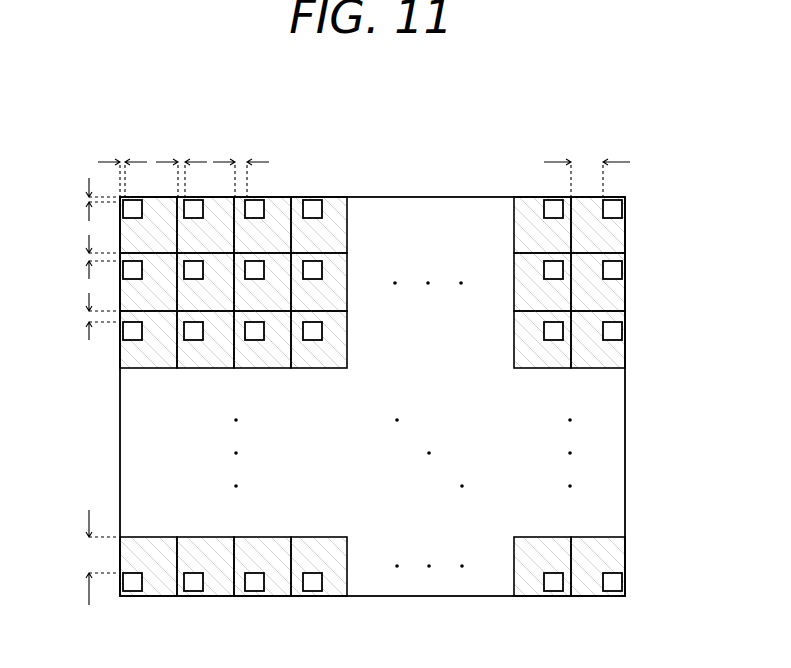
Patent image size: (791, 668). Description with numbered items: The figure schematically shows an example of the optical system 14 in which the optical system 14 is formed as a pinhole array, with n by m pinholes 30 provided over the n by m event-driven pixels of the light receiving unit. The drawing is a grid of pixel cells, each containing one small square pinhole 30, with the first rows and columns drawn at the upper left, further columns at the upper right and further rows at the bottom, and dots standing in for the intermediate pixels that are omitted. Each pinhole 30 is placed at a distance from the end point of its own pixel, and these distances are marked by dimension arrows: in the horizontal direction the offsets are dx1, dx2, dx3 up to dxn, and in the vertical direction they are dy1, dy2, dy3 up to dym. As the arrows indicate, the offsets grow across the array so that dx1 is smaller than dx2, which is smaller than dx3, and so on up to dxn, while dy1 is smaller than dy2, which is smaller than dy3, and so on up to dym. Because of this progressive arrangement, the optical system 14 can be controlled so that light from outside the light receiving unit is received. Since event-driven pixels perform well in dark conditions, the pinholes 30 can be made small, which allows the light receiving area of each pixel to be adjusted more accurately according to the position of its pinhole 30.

The optical system 14 is at (625, 227).
The pinhole 30 is at (311, 207).
The distance dx1 is at (122, 162).
The distance dx2 is at (181, 162).
The distance dx3 is at (241, 162).
The distance dxn is at (587, 162).
The distance dy1 is at (76, 199).
The distance dy2 is at (76, 257).
The distance dy3 is at (76, 316).
The distance dym is at (74, 557).